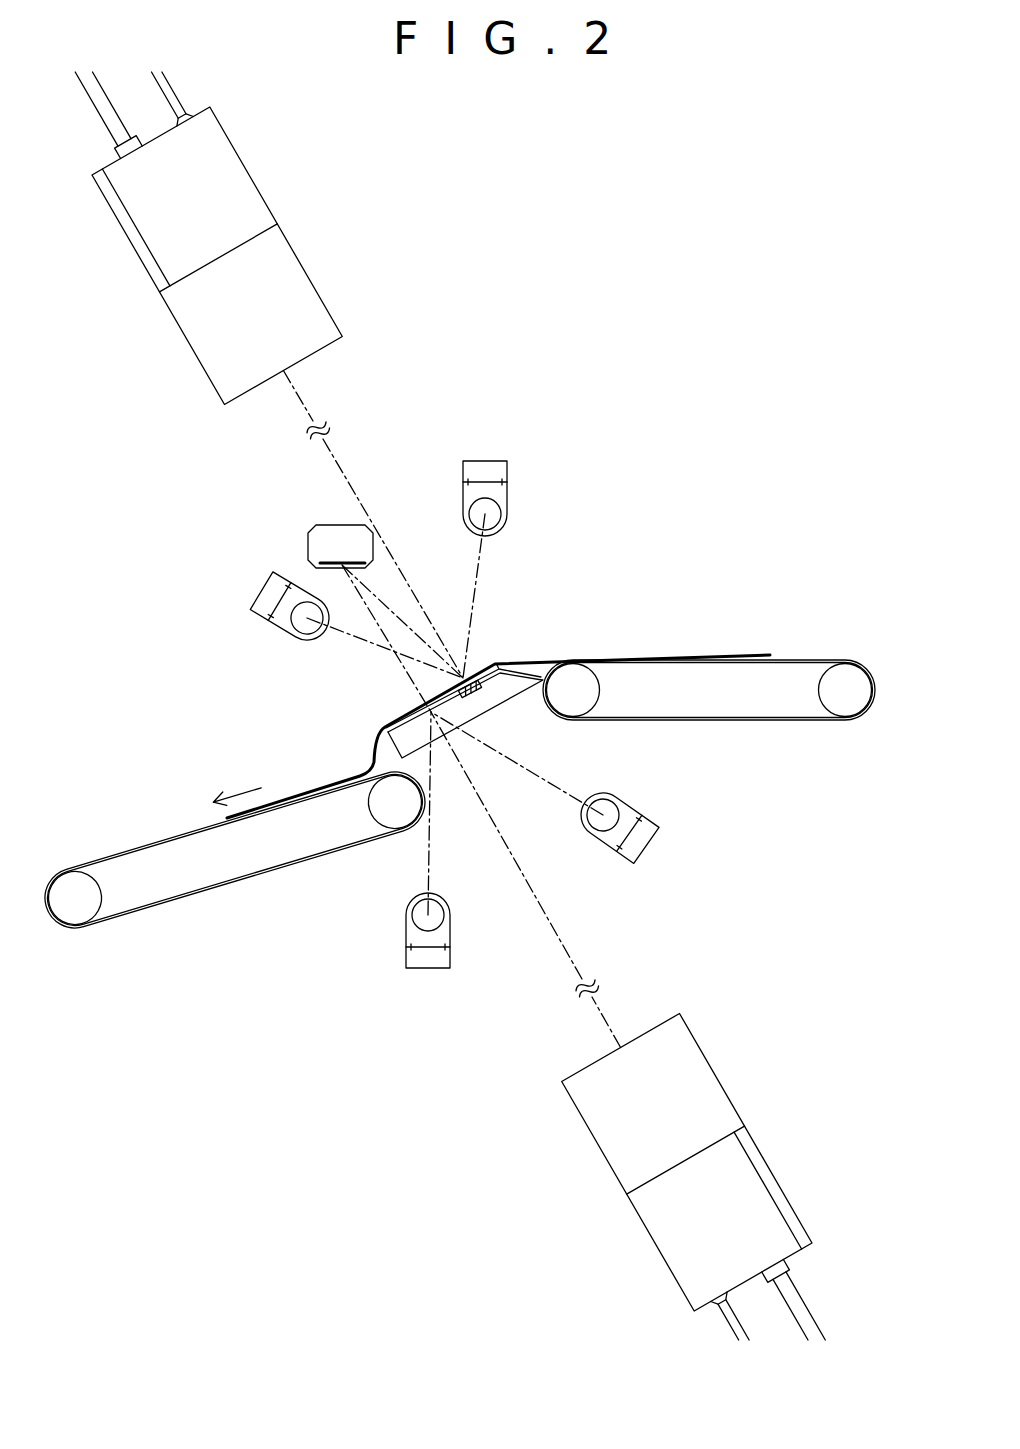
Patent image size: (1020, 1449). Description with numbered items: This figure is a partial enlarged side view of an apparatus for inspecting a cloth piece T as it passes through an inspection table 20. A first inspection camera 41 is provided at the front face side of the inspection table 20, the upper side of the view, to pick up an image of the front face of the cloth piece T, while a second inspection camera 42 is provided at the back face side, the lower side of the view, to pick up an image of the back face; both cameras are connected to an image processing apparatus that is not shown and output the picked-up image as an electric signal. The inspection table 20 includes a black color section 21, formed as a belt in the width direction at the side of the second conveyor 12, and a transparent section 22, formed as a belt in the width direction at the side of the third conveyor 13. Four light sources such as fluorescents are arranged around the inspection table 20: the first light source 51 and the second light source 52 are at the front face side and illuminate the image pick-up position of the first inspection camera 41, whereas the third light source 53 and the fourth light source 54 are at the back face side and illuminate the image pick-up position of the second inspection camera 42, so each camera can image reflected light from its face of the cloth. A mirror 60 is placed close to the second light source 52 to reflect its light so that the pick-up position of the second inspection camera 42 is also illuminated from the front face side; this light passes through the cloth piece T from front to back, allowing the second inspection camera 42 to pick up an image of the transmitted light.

The cloth piece T is at (732, 650).
The second conveyor 12 is at (788, 720).
The third conveyor 13 is at (155, 903).
The inspection table 20 is at (490, 653).
The black color section 21 is at (477, 693).
The transparent section 22 is at (403, 720).
The first inspection camera 41 is at (228, 167).
The second inspection camera 42 is at (737, 1173).
The first light source 51 is at (497, 510).
The second light source 52 is at (300, 628).
The third light source 53 is at (602, 825).
The fourth light source 54 is at (422, 922).
The mirror 60 is at (317, 540).